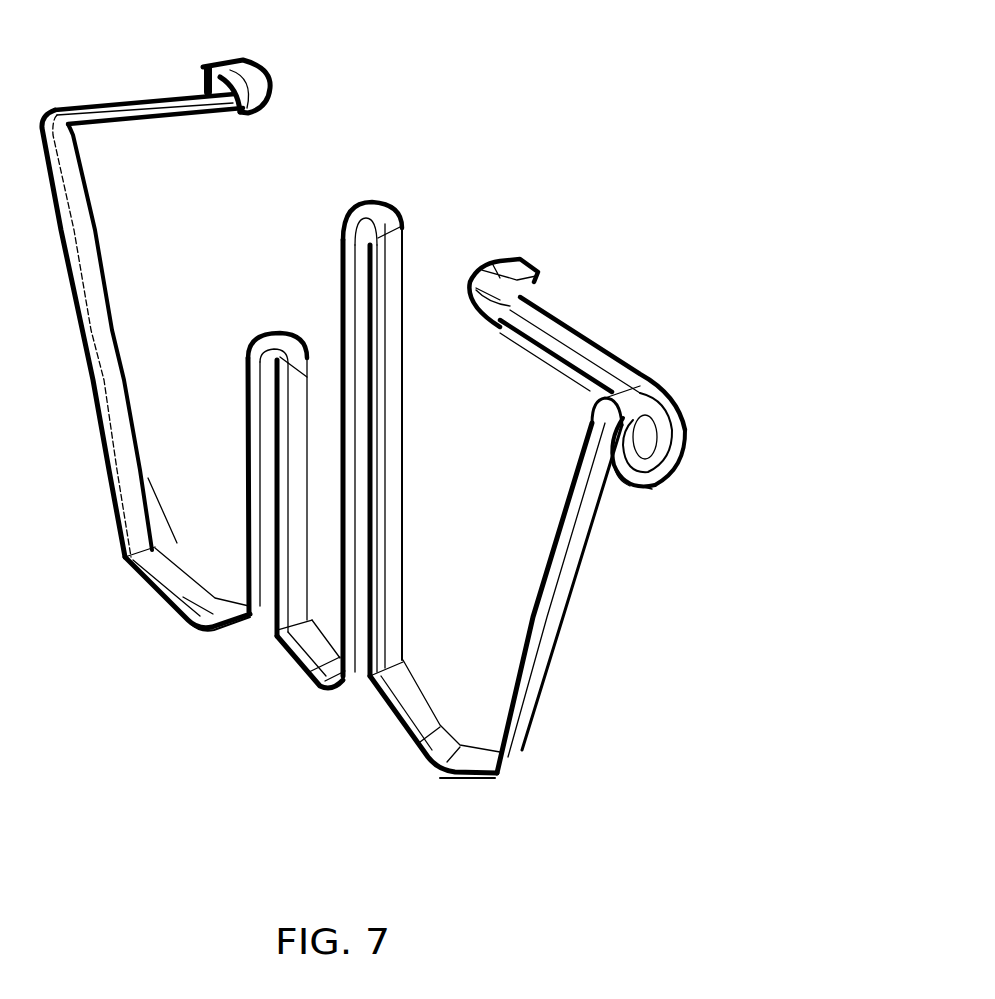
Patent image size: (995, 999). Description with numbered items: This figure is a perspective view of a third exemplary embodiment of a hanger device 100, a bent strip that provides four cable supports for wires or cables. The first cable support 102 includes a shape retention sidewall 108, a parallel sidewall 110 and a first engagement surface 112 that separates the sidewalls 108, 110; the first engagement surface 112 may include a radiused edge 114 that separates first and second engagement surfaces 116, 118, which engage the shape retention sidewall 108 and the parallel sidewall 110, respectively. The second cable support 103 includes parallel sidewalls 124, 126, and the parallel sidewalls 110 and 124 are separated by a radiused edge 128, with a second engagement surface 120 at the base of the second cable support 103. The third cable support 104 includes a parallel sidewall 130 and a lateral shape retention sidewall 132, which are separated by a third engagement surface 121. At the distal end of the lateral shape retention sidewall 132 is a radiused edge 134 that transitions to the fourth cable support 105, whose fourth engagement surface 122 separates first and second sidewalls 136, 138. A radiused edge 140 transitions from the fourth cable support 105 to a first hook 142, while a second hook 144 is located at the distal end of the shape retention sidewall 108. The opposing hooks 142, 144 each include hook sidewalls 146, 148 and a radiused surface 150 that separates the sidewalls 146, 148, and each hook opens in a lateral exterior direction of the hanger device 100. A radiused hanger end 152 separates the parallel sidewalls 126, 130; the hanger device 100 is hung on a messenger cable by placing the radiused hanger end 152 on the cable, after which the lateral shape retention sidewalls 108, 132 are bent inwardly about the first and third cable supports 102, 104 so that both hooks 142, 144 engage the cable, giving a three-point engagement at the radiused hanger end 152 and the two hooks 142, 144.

The hanger device 100 is at (449, 419).
The first cable support 102 is at (153, 613).
The second cable support 103 is at (292, 668).
The third cable support 104 is at (413, 760).
The fourth cable support 105 is at (640, 490).
The shape retention sidewall 108 is at (118, 432).
The parallel sidewall 110 is at (272, 500).
The first engagement surface 112 is at (183, 563).
The radiused edge 114 is at (197, 632).
The first engagement surface 116 is at (172, 568).
The second engagement surface 118 is at (233, 600).
The second engagement surface 120 is at (325, 637).
The third engagement surface 121 is at (440, 742).
The fourth engagement surface 122 is at (623, 485).
The parallel sidewall 124 is at (305, 397).
The parallel sidewall 126 is at (330, 290).
The radiused edge 128 is at (292, 377).
The parallel sidewall 130 is at (396, 482).
The lateral shape retention sidewall 132 is at (550, 550).
The radiused edge 134 is at (640, 383).
The first sidewall 136 is at (637, 437).
The second sidewall 138 is at (672, 452).
The radiused edge 140 is at (678, 413).
The first hook 142 is at (524, 258).
The second hook 144 is at (203, 63).
The hook sidewall 146 is at (216, 66).
The second hook sidewall 148 is at (180, 93).
The radiused surface 150 is at (261, 82).
The radiused hanger end 152 is at (380, 215).